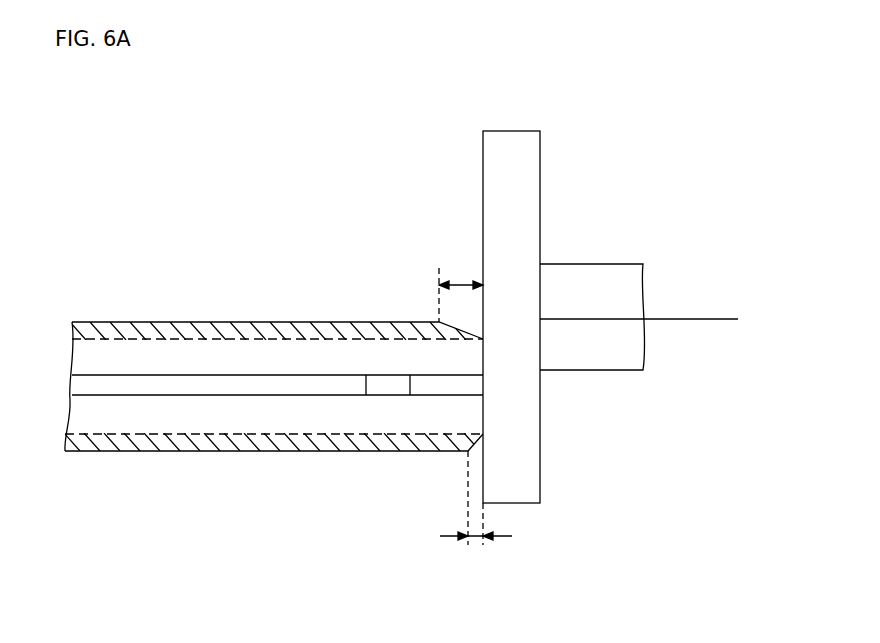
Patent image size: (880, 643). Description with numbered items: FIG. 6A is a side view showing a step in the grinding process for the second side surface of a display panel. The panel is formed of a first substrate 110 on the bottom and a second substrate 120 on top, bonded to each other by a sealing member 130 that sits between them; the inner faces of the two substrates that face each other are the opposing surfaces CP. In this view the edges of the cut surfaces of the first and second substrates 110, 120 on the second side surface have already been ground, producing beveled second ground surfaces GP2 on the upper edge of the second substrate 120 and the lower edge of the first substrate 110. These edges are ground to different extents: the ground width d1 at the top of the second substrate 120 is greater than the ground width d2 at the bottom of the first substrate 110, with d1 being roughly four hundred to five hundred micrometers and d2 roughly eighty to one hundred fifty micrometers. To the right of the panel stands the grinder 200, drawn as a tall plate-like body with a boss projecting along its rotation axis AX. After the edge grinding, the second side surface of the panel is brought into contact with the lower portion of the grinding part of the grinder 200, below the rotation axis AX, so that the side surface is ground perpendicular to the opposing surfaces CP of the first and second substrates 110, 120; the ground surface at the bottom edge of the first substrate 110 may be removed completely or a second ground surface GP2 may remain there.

The first substrate 110 is at (130, 451).
The second substrate 120 is at (133, 322).
The sealing member 130 is at (388, 386).
The grinder 200 is at (598, 185).
The opposing surfaces CP is at (258, 395).
The second ground surface GP2 is at (283, 339).
The ground width d1 is at (461, 292).
The ground width d2 is at (476, 510).
The rotation axis AX is at (639, 306).